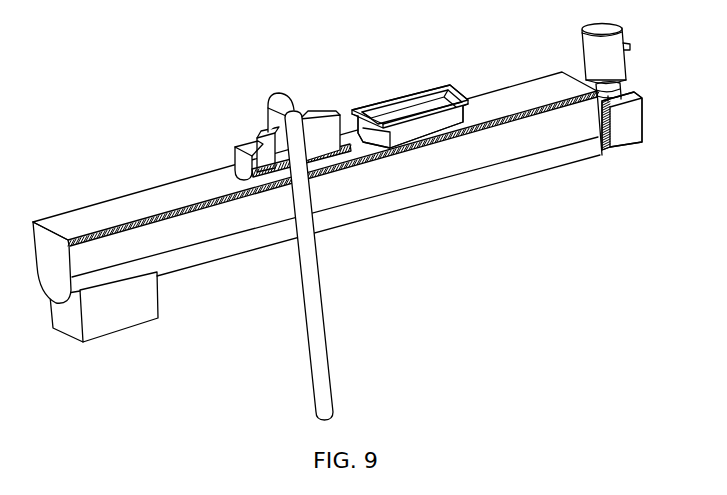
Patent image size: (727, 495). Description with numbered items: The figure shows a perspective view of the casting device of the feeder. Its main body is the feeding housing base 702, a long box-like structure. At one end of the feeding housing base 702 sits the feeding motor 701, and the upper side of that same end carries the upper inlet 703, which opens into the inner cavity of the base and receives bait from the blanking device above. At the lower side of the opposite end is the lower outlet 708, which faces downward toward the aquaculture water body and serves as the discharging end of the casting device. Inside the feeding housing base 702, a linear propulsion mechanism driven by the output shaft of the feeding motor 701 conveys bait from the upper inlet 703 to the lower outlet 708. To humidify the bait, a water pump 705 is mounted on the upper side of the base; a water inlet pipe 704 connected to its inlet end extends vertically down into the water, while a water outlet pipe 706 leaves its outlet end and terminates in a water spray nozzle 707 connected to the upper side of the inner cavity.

The feeding motor 701 is at (615, 118).
The feeding housing base 702 is at (522, 103).
The upper inlet 703 is at (410, 112).
The water inlet pipe 704 is at (318, 276).
The water pump 705 is at (327, 128).
The water outlet pipe 706 is at (246, 140).
The water spray nozzle 707 is at (245, 180).
The lower outlet 708 is at (115, 307).